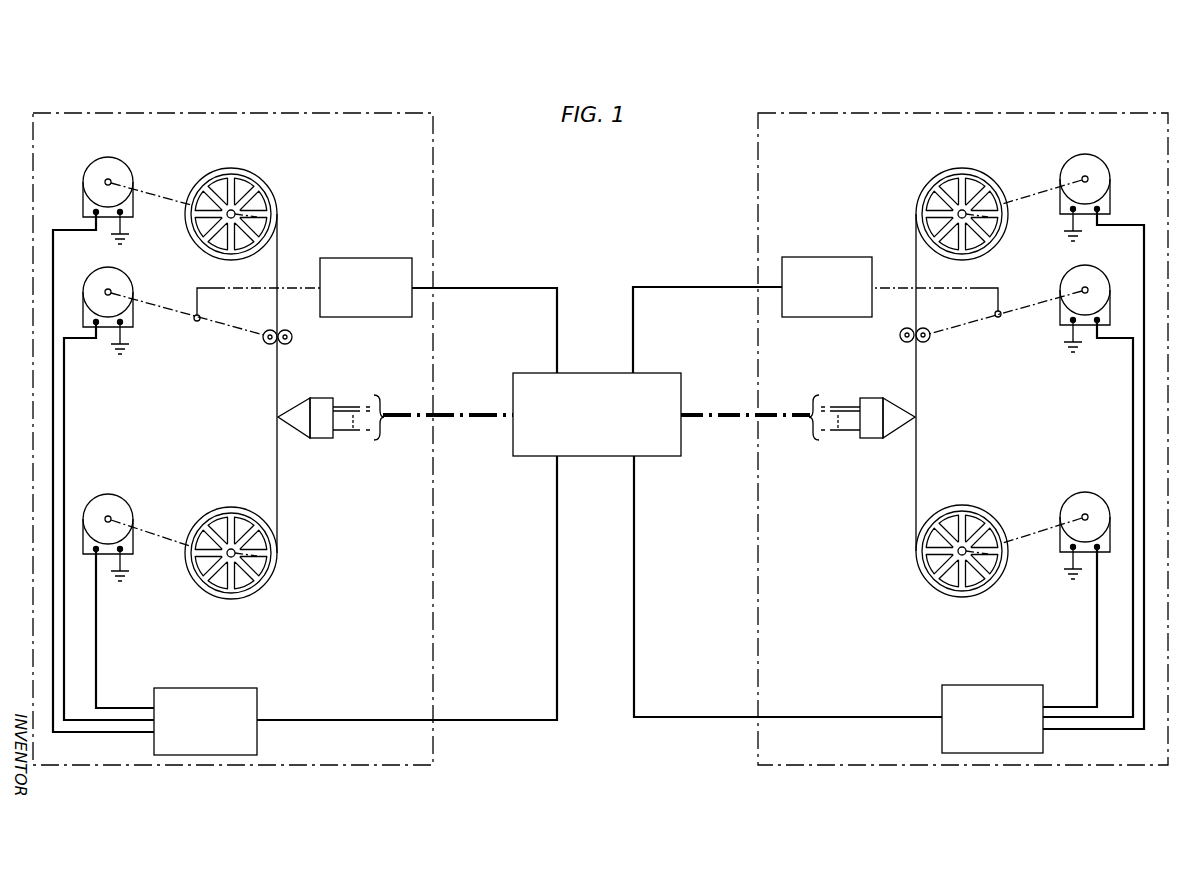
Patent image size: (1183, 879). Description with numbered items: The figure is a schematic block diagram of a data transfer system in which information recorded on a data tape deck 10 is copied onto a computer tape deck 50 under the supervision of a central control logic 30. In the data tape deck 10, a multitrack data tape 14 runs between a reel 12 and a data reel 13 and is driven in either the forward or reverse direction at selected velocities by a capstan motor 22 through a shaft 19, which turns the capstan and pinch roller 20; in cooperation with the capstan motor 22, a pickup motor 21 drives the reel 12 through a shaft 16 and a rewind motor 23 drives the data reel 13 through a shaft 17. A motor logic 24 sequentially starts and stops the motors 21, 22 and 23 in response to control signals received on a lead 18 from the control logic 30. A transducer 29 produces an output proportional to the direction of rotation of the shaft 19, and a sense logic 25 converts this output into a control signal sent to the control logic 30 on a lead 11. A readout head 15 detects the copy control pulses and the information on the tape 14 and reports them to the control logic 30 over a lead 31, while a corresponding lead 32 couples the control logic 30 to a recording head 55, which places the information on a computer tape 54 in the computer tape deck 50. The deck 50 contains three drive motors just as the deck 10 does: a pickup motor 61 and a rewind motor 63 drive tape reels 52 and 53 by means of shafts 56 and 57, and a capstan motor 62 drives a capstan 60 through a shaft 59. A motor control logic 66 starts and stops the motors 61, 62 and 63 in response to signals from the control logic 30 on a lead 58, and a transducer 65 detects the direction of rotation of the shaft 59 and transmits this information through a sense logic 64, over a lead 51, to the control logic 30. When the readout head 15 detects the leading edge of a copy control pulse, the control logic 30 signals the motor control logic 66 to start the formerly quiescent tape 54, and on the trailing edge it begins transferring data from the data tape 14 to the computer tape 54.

The data tape deck 10 is at (433, 192).
The lead 11 is at (483, 287).
The reel 12 is at (236, 169).
The data reel 13 is at (231, 506).
The multitrack data tape 14 is at (279, 468).
The readout head 15 is at (319, 396).
The shaft 16 is at (152, 190).
The shaft 17 is at (152, 526).
The lead 18 is at (556, 529).
The shaft 19 is at (153, 300).
The capstan and pinch roller 20 is at (262, 343).
The pickup motor 21 is at (112, 157).
The capstan motor 22 is at (112, 267).
The rewind motor 23 is at (108, 496).
The motor logic 24 is at (200, 688).
The sense logic 25 is at (355, 258).
The transducer 29 is at (194, 322).
The control logic 30 is at (590, 372).
The lead 31 is at (462, 412).
The head cable 32 is at (718, 412).
The computer tape deck 50 is at (758, 160).
The sense logic output line 51 is at (662, 287).
The tape reel 52 is at (947, 168).
The tape reel 53 is at (960, 504).
The computer tape 54 is at (914, 462).
The recording head 55 is at (870, 397).
The shaft 56 is at (1035, 190).
The shaft 57 is at (1033, 528).
The lead 58 is at (637, 531).
The shaft 59 is at (1025, 305).
The capstan 60 is at (929, 341).
The pickup motor 61 is at (1080, 156).
The capstan motor 62 is at (1090, 266).
The rewind motor 63 is at (1083, 492).
The sense logic 64 is at (818, 257).
The transducer 65 is at (1000, 318).
The motor control logic 66 is at (988, 685).